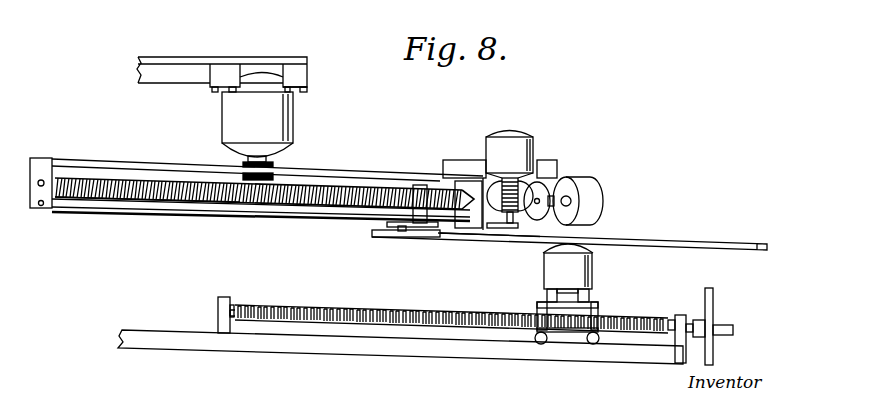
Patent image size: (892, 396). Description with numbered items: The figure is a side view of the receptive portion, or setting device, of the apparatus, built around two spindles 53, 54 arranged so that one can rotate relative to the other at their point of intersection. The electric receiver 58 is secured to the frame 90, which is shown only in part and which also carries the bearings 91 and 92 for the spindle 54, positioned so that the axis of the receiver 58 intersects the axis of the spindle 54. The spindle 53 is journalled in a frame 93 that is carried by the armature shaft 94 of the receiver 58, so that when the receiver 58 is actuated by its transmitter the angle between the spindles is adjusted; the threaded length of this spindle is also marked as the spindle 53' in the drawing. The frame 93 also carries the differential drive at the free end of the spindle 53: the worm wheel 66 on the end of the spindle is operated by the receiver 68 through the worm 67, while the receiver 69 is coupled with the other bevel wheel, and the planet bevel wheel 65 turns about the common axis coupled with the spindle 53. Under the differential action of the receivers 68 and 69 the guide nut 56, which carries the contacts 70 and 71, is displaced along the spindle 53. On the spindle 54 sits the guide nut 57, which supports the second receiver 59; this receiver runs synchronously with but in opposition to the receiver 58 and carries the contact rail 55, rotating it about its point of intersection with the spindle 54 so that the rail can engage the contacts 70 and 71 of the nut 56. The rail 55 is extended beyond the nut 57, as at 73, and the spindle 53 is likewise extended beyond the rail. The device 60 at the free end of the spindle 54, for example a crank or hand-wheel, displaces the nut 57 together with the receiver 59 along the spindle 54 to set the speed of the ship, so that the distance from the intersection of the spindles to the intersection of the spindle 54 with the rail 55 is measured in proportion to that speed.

The frame 90 is at (172, 59).
The electric receiver 58 is at (285, 122).
The armature shaft 94 is at (274, 161).
The frame 93 is at (351, 167).
The spindle 53 is at (264, 214).
The lead screw thread 53' is at (147, 219).
The guide nut 56 is at (422, 186).
The contact 71 is at (406, 232).
The contact 70 is at (422, 238).
The rail extension 73 is at (674, 244).
The contact rail 55 is at (500, 238).
The worm wheel 66 is at (493, 228).
The receiver 68 is at (507, 135).
The worm 67 is at (539, 186).
The planet bevel wheel 65 is at (553, 178).
The receiver 69 is at (592, 202).
The bearing 91 is at (219, 320).
The spindle 54 is at (258, 306).
The bearing 92 is at (681, 315).
The setting device 60 is at (714, 312).
The receiver 59 is at (552, 270).
The guide nut 57 is at (597, 307).